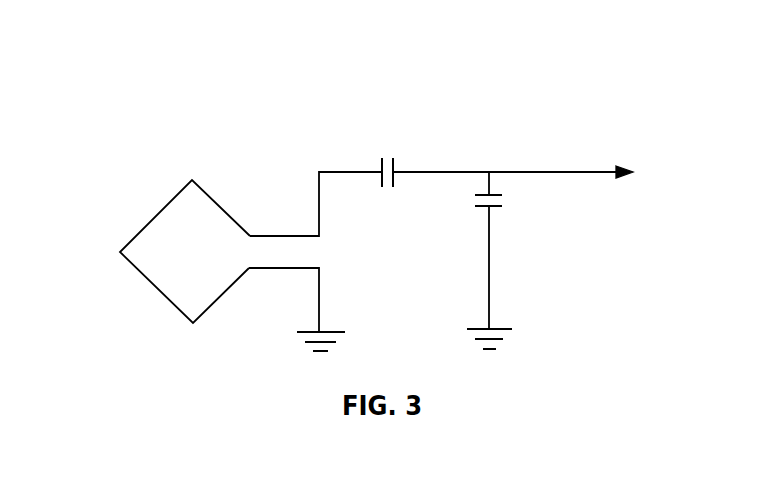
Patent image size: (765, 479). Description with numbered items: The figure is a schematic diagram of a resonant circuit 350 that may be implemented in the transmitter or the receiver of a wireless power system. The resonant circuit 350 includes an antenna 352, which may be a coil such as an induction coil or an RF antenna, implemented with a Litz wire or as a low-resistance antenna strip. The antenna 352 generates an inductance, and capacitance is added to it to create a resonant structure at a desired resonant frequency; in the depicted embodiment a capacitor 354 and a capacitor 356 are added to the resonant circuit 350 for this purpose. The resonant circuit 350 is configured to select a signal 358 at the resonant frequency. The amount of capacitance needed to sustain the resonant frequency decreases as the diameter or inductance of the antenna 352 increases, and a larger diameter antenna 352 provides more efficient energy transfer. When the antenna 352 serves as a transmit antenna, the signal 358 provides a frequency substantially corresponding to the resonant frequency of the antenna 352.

The resonant circuit 350 is at (166, 68).
The antenna 352 is at (158, 212).
The capacitor 354 is at (395, 163).
The capacitor 356 is at (494, 207).
The signal 358 is at (533, 170).